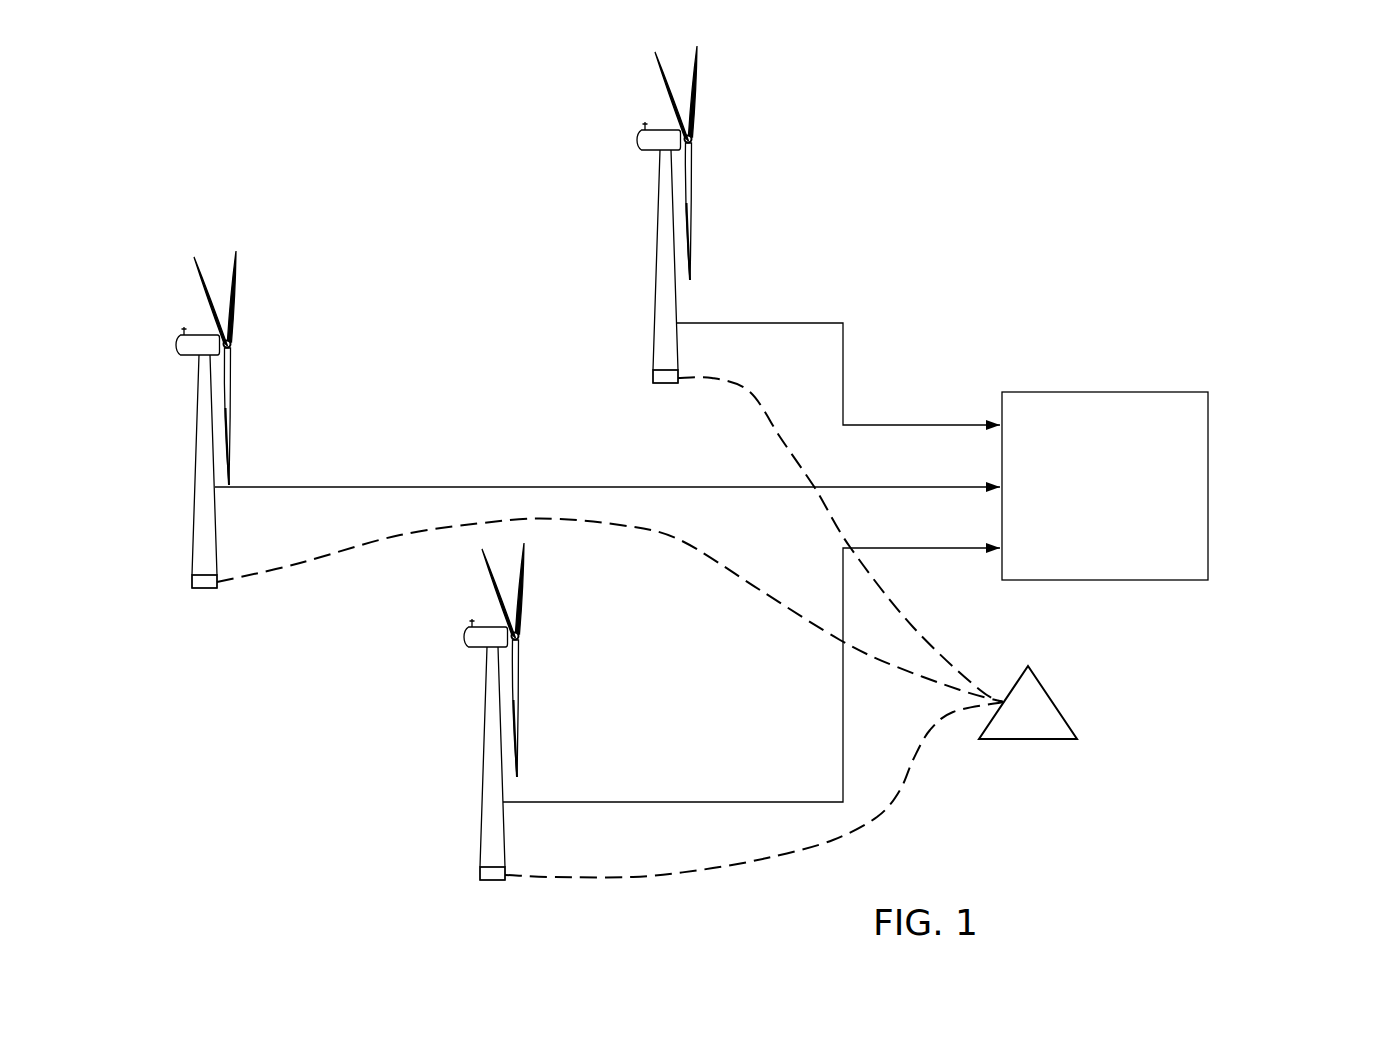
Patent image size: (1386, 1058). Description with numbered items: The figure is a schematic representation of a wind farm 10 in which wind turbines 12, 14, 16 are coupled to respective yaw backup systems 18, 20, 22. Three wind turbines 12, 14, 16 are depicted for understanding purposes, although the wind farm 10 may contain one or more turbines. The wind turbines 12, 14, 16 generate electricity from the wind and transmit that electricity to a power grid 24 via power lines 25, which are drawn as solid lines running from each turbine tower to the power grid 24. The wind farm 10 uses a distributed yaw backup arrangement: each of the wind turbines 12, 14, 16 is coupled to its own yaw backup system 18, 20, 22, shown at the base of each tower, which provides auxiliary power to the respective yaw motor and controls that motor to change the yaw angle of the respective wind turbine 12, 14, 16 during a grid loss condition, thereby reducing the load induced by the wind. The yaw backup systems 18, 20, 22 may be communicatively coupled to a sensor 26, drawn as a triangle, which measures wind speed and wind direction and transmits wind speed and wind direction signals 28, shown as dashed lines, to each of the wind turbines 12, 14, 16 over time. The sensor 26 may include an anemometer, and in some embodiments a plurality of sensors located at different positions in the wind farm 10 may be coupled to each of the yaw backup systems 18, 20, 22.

The wind farm 10 is at (1250, 117).
The wind turbine 12 is at (690, 172).
The wind turbine 14 is at (229, 378).
The wind turbine 16 is at (518, 663).
The yaw backup system 18 is at (653, 378).
The yaw backup system 20 is at (192, 583).
The yaw backup system 22 is at (480, 876).
The power grid 24 is at (1208, 482).
The power lines 25 is at (897, 425).
The sensor 26 is at (1052, 700).
The wind speed and wind direction signals 28 is at (895, 667).